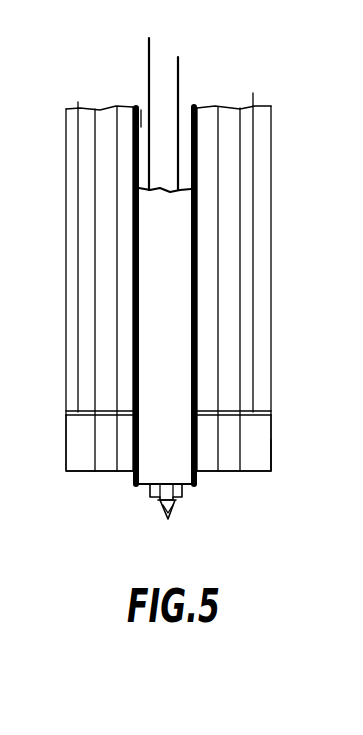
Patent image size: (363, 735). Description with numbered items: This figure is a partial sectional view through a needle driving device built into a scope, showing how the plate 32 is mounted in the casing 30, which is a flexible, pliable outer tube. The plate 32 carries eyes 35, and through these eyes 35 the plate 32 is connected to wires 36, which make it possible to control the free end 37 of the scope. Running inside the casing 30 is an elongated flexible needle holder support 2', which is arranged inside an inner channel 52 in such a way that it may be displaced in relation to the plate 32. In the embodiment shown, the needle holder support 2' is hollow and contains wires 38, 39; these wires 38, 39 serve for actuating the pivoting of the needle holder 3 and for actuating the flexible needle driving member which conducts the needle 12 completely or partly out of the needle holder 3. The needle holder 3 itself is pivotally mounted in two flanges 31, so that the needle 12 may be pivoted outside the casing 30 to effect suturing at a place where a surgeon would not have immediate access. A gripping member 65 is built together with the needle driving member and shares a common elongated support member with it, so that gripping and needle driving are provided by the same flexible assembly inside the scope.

The outer tube 30 is at (271, 122).
The wires 36 is at (73, 160).
The plate 32 is at (75, 440).
The eyes 35 is at (82, 409).
The inner channel 52 is at (135, 143).
The wire 38 is at (147, 52).
The wire 39 is at (179, 72).
The needle holder support 2' is at (106, 93).
The flanges 31 is at (184, 493).
The needle 12 is at (160, 508).
The needle holder 3 is at (178, 503).
The free end 37 is at (283, 451).
The gripping member 65 is at (353, 549).